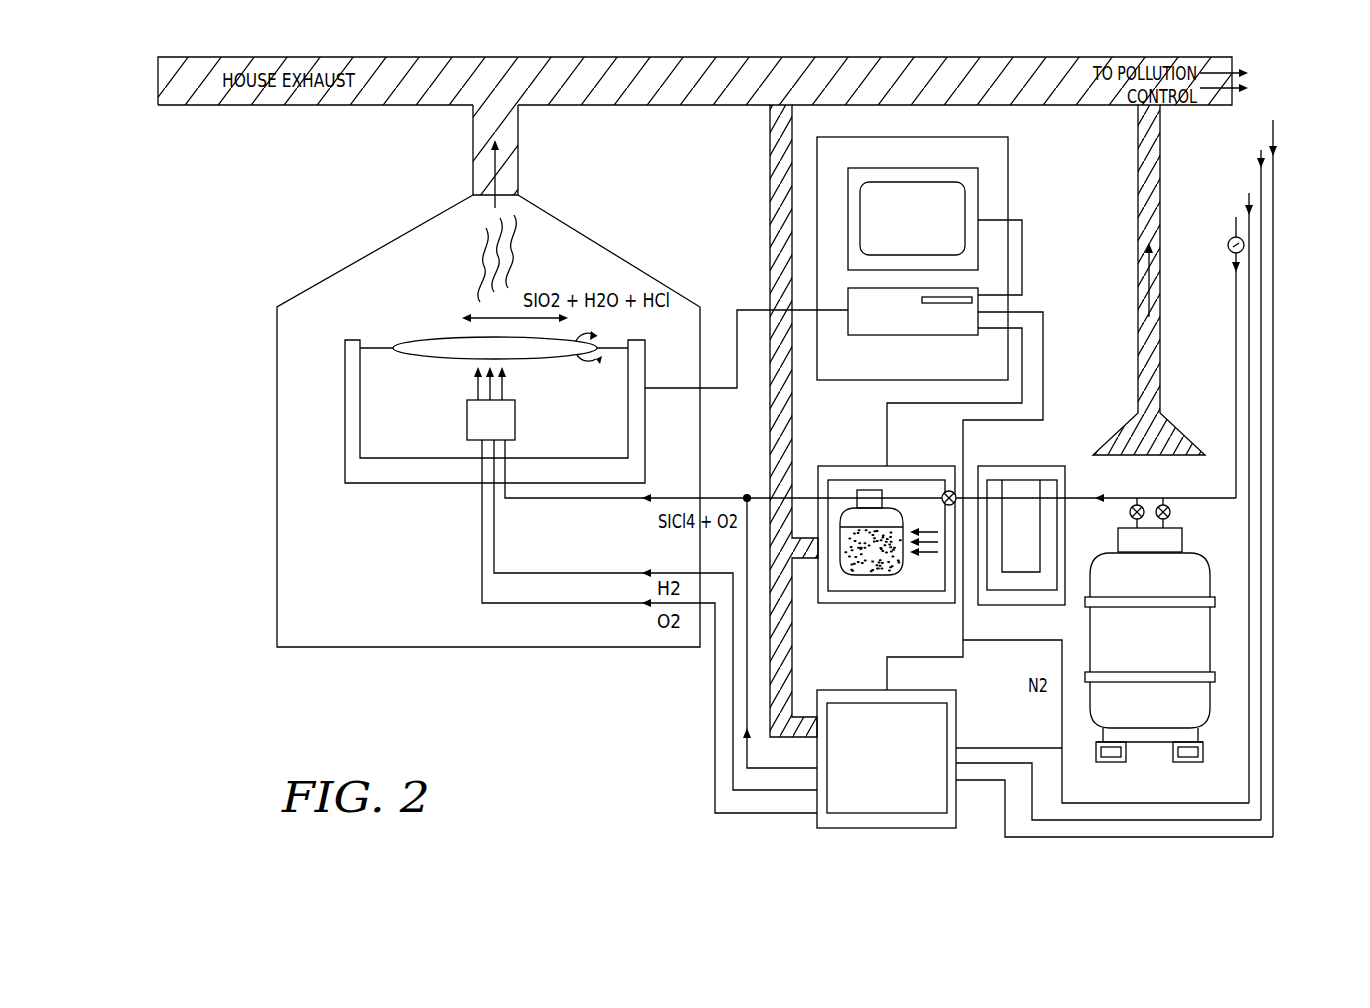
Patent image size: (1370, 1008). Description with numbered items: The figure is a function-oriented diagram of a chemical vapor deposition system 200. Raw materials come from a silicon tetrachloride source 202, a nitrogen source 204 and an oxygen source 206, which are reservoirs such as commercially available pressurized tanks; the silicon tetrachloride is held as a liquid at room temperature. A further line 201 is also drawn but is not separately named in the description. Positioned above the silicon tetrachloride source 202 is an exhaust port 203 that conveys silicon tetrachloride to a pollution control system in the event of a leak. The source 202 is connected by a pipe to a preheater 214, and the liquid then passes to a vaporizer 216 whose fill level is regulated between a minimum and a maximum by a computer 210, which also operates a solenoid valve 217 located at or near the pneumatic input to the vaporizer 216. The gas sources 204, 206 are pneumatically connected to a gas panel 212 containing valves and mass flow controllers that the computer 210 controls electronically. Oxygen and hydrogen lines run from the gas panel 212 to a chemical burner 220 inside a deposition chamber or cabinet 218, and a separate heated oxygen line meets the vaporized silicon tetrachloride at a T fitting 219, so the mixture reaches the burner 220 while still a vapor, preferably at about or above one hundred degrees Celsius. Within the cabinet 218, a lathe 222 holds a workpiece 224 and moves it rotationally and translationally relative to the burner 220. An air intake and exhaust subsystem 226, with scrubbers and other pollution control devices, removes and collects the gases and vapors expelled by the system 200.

The chemical vapor deposition system 200 is at (598, 718).
The hydrogen supply line 201 is at (1273, 412).
The SiCl4 source 202 is at (1210, 640).
The exhaust port 203 is at (1138, 350).
The nitrogen source 204 is at (1249, 297).
The oxygen source 206 is at (1261, 347).
The computer 210 is at (978, 188).
The gas panel 212 is at (866, 690).
The preheater 214 is at (1005, 466).
The vaporizer 216 is at (840, 466).
The solenoid valve 217 is at (948, 491).
The deposition chamber 218 is at (338, 271).
The T fitting 219 is at (747, 496).
The chemical burner 220 is at (467, 425).
The lathe 222 is at (380, 483).
The workpiece 224 is at (445, 340).
The air intake and exhaust subsystem 226 is at (472, 160).